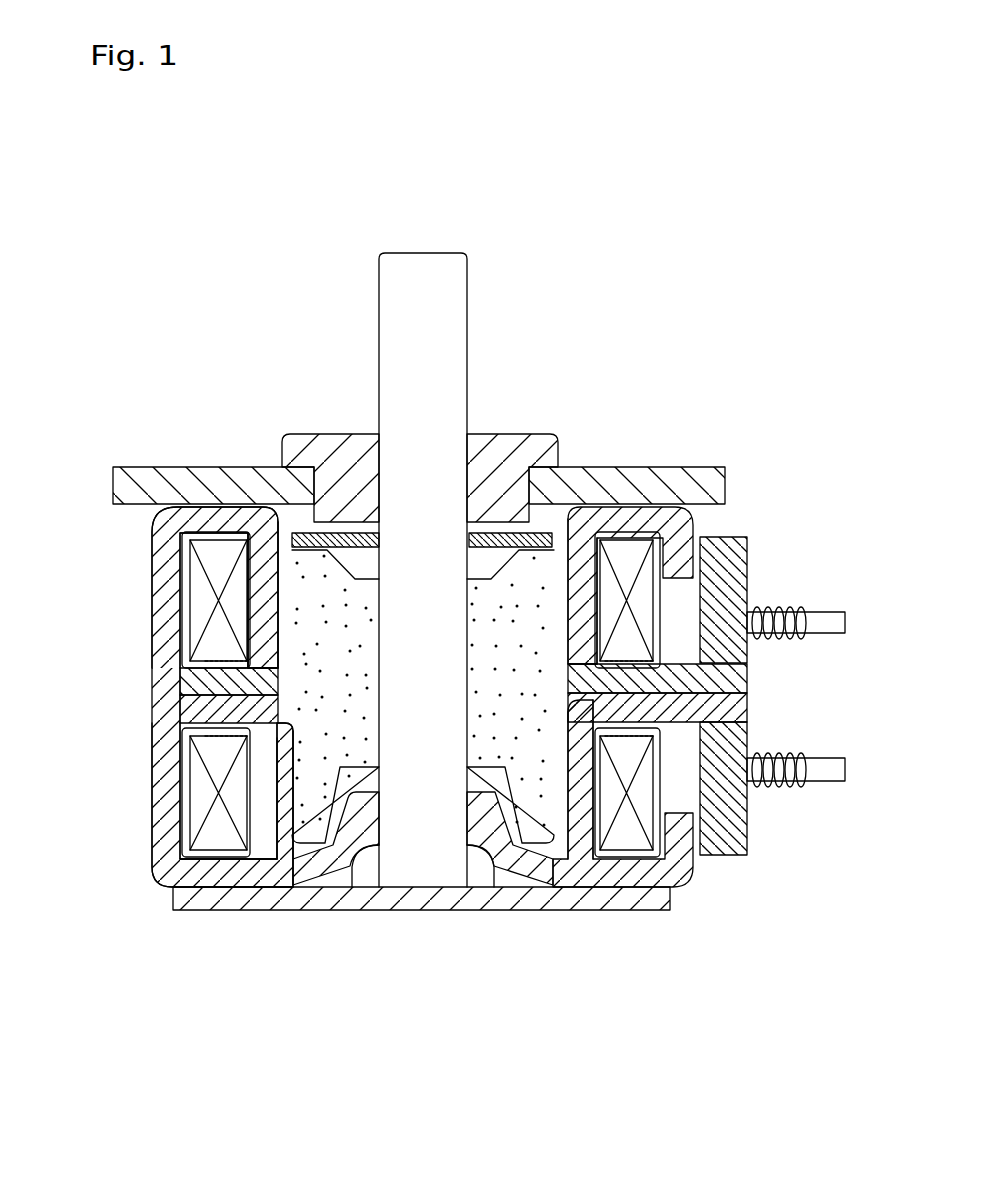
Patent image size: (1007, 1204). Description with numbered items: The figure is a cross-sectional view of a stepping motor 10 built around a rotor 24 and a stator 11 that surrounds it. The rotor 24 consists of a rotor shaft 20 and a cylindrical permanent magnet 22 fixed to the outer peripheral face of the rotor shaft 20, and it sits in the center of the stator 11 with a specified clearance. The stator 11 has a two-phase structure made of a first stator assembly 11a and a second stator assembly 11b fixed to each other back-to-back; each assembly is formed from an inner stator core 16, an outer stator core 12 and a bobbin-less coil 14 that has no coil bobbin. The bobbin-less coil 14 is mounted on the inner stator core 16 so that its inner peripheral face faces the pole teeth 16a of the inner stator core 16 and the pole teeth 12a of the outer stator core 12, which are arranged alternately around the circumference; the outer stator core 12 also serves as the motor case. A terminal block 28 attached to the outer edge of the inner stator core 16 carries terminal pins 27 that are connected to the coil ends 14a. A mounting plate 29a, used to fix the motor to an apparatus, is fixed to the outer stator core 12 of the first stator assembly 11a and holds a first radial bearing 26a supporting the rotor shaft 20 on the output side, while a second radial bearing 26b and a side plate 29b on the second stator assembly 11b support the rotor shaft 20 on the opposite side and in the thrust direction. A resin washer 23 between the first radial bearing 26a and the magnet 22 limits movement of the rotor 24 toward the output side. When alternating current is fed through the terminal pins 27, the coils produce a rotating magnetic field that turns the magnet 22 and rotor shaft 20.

The stepping motor 10 is at (192, 225).
The stator 11 is at (56, 594).
The first stator assembly 11a is at (139, 604).
The second stator assembly 11b is at (139, 784).
The outer stator core 12 is at (155, 532).
The pole teeth of outer stator core 12a is at (262, 540).
The bobbin-less coil 14 is at (215, 552).
The coil ends 14a is at (788, 607).
The inner stator core 16 is at (192, 684).
The pole teeth of inner stator core 16a is at (286, 805).
The rotor shaft 20 is at (412, 865).
The magnet 22 is at (528, 823).
The washer 23 is at (503, 540).
The rotor 24 is at (520, 997).
The first radial bearing 26a is at (310, 440).
The second radial bearing 26b is at (350, 838).
The terminal pins 27 is at (815, 618).
The terminal block 28 is at (718, 572).
The mounting plate 29a is at (173, 467).
The side plate 29b is at (205, 870).